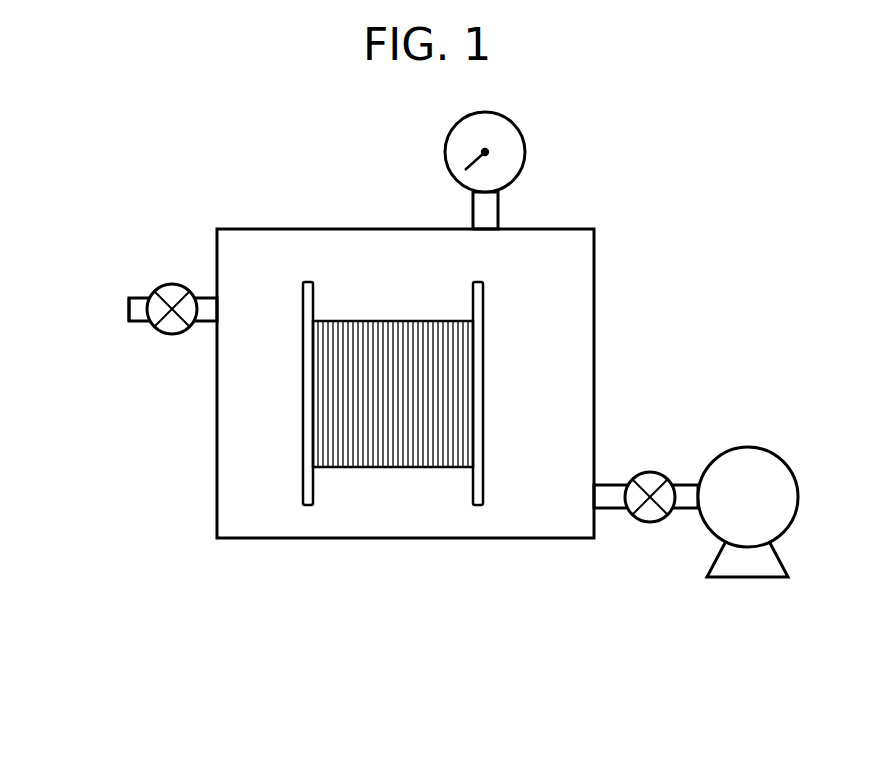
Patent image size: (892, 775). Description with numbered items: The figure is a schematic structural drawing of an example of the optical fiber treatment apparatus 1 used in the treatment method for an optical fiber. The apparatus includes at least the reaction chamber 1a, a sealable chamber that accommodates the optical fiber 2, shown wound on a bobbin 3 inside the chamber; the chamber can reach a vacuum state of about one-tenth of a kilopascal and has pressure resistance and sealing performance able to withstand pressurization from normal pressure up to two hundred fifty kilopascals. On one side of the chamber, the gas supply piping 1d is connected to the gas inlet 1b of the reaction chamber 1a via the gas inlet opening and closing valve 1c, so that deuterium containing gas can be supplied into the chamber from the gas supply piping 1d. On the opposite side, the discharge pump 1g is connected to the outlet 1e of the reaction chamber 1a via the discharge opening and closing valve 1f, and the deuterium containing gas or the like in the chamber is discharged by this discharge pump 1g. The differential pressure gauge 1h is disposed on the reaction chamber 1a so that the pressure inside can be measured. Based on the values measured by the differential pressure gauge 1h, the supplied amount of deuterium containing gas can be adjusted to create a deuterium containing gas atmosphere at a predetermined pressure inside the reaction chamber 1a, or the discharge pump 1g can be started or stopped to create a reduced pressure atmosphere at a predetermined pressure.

The optical fiber treatment apparatus 1 is at (680, 155).
The reaction chamber 1a is at (595, 291).
The gas inlet 1b is at (200, 298).
The gas inlet opening and closing valve 1c is at (160, 287).
The gas supply piping 1d is at (128, 315).
The outlet 1e is at (595, 497).
The discharge opening and closing valve 1f is at (657, 473).
The discharge pump 1g is at (752, 447).
The differential pressure gauge 1h is at (513, 122).
The optical fiber 2 is at (390, 322).
The bobbin 3 is at (480, 300).